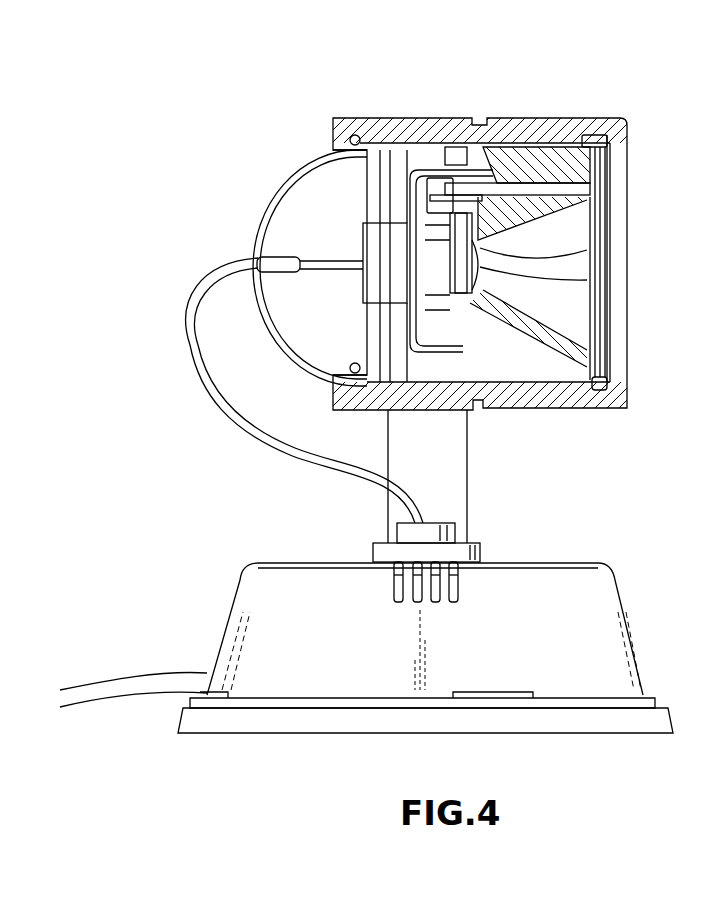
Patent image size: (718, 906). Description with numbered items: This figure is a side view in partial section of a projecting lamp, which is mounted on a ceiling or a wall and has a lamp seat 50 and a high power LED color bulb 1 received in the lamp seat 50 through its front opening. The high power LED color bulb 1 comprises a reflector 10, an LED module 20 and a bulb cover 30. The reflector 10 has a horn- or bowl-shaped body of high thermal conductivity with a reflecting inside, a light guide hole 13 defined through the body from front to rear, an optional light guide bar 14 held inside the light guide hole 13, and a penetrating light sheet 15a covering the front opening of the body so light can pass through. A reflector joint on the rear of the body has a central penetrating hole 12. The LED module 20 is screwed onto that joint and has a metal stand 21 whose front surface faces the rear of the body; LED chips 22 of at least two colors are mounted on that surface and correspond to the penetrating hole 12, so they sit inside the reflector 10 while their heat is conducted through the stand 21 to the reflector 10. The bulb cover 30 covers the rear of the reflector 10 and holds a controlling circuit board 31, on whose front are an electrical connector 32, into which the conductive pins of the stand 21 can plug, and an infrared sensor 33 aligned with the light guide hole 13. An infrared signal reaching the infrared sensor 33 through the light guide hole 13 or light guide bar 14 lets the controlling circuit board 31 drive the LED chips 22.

The high power LED color bulb 1 is at (463, 152).
The reflector 10 is at (547, 177).
The central penetrating hole 12 is at (565, 248).
The light guide hole 13 is at (612, 142).
The light guide bar 14 is at (507, 183).
The penetrating light sheet 15a is at (605, 207).
The LED module 20 is at (596, 383).
The stand 21 is at (483, 300).
The LED chips 22 is at (573, 279).
The bulb cover 30 is at (427, 172).
The controlling circuit board 31 is at (420, 272).
The electrical connector 32 is at (437, 273).
The infrared sensor 33 is at (433, 198).
The lamp seat 50 is at (240, 575).